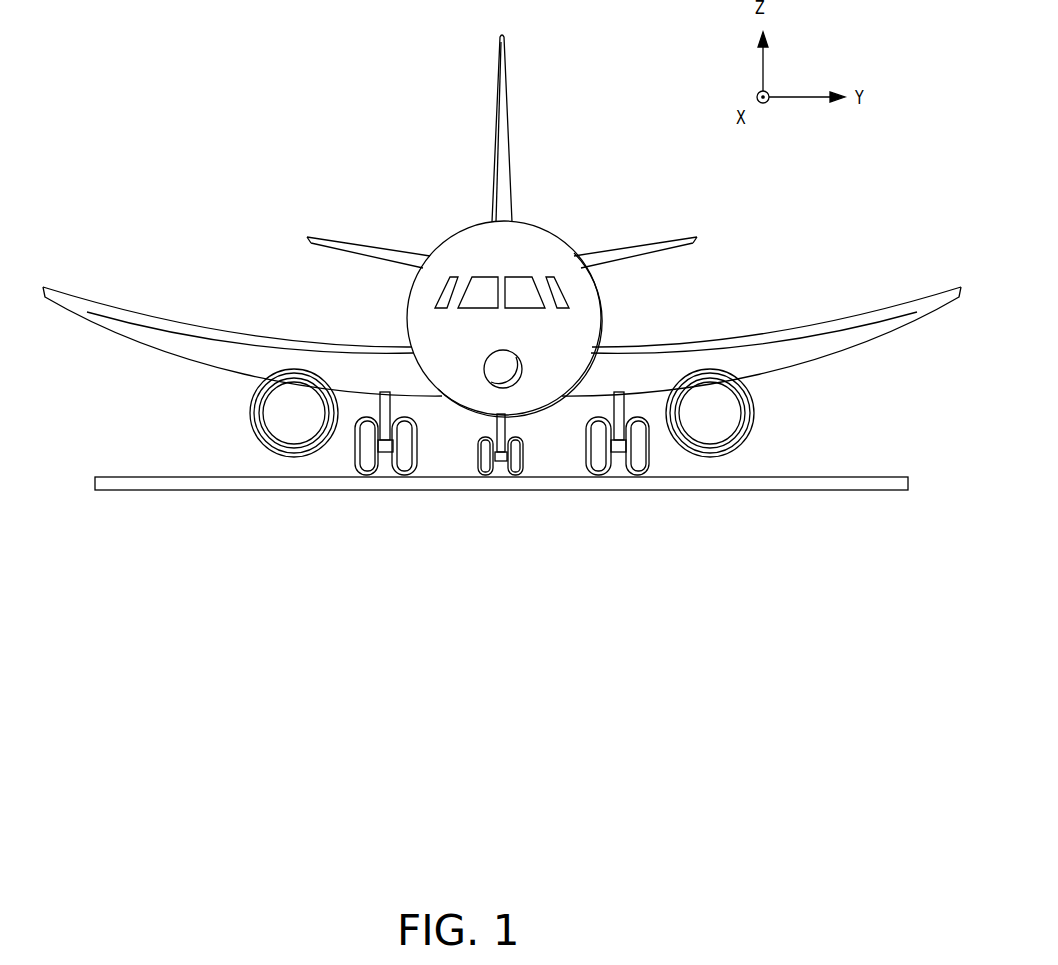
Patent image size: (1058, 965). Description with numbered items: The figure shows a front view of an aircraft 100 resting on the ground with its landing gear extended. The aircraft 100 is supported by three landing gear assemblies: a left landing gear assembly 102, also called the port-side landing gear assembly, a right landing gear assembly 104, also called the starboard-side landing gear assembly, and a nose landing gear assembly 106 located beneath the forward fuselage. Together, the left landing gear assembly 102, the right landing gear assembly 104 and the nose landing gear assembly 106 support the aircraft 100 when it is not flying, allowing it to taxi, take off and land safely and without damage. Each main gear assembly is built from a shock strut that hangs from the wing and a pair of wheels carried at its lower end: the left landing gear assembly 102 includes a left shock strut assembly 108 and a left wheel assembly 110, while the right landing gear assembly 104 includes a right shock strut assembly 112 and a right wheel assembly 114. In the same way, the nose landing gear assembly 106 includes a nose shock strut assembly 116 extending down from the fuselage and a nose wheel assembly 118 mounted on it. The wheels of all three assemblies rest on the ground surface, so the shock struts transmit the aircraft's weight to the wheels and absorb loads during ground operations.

The aircraft 100 is at (332, 126).
The left landing gear assembly 102 is at (694, 472).
The right landing gear assembly 104 is at (355, 387).
The nose landing gear assembly 106 is at (458, 473).
The left shock strut assembly 108 is at (610, 403).
The left wheel assembly 110 is at (618, 452).
The right shock strut assembly 112 is at (380, 436).
The right wheel assembly 114 is at (385, 452).
The nose shock strut assembly 116 is at (500, 421).
The nose wheel assembly 118 is at (503, 458).